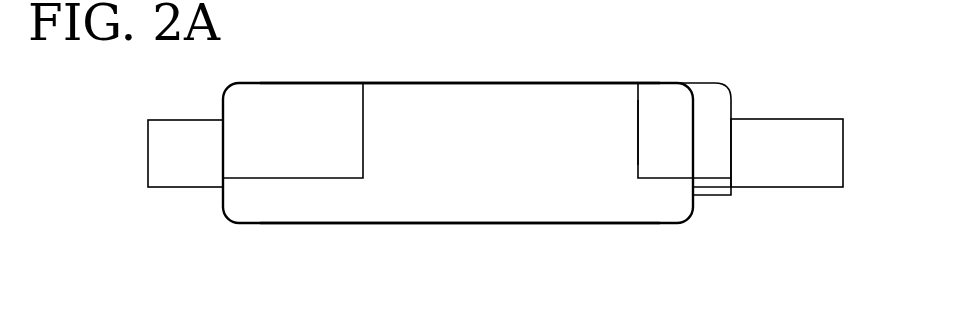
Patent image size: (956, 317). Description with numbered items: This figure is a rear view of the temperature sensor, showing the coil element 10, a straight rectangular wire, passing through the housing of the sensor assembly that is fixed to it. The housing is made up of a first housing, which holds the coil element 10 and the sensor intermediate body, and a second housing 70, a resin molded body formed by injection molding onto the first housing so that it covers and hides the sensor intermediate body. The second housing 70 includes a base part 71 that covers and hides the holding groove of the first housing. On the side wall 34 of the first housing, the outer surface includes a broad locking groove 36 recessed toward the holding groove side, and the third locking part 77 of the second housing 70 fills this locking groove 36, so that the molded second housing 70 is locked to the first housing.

The coil element 10 is at (773, 119).
The side wall 34 is at (697, 83).
The locking groove 36 is at (637, 132).
The second housing 70 is at (590, 238).
The base part 71 is at (470, 224).
The third locking part 77 is at (446, 83).